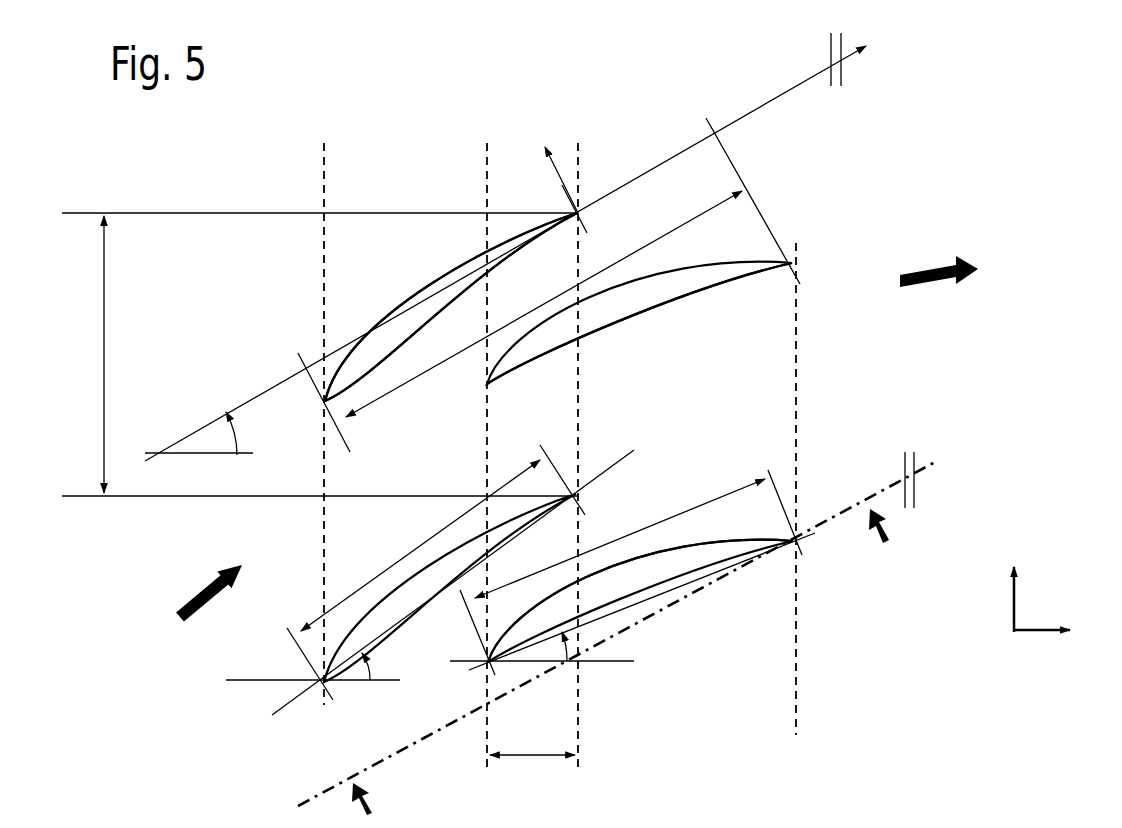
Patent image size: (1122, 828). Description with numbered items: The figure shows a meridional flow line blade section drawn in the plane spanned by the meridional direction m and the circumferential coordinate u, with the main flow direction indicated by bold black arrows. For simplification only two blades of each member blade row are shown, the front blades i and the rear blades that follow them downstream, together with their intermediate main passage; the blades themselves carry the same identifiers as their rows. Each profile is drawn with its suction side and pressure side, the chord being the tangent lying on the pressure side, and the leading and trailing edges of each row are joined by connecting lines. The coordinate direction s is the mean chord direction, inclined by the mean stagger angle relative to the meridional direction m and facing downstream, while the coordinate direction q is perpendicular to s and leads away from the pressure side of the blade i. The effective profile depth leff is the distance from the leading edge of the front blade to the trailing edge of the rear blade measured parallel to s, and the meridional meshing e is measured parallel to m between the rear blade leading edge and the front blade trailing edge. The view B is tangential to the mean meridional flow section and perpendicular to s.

The front blade i is at (403, 427).
The effective profile depth leff is at (549, 285).
The meridional meshing e is at (532, 738).
The coordinate direction q is at (553, 180).
The coordinate direction s is at (518, 241).
The view B- B is at (617, 638).
The circumferential coordinate u is at (1002, 596).
The meridional direction m is at (1062, 632).